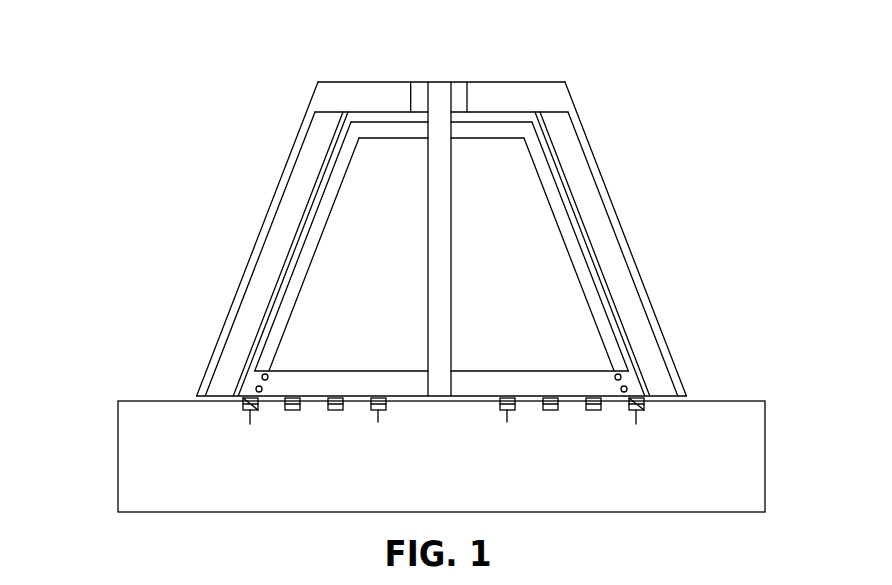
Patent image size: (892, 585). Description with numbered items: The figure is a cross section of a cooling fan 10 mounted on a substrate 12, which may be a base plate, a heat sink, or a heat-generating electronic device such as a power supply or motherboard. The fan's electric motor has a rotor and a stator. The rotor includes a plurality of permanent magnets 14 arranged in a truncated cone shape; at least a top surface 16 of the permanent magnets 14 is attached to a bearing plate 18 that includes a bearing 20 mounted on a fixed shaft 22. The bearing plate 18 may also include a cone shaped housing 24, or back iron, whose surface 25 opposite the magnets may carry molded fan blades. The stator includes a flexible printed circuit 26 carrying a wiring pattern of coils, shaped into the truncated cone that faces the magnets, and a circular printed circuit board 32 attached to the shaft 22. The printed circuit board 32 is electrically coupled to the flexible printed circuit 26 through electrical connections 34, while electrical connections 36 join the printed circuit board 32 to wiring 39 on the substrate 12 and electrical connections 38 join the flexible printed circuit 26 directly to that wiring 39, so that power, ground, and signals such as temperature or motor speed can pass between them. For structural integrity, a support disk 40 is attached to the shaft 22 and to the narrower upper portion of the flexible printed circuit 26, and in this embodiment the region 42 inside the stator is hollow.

The cooling fan 10 is at (156, 187).
The substrate 12 is at (118, 435).
The permanent magnets 14 is at (427, 239).
The top surface 16 is at (327, 112).
The bearing plate 18 is at (316, 82).
The bearing 20 is at (417, 85).
The fixed shaft 22 is at (427, 292).
The cone shaped housing 24 is at (276, 200).
The surface of the housing 25 is at (297, 132).
The flexible printed circuit 26 is at (297, 282).
The circular printed circuit board 32 is at (475, 390).
The electrical connections 34 is at (262, 377).
The electrical connections 36 is at (335, 411).
The electrical connections 38 is at (243, 405).
The wiring 39 is at (250, 424).
The support disk 40 is at (391, 132).
The region 42 is at (366, 219).